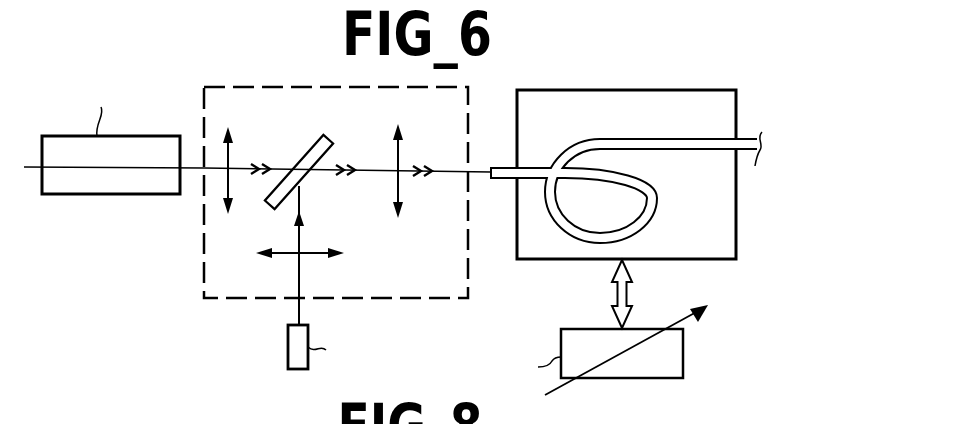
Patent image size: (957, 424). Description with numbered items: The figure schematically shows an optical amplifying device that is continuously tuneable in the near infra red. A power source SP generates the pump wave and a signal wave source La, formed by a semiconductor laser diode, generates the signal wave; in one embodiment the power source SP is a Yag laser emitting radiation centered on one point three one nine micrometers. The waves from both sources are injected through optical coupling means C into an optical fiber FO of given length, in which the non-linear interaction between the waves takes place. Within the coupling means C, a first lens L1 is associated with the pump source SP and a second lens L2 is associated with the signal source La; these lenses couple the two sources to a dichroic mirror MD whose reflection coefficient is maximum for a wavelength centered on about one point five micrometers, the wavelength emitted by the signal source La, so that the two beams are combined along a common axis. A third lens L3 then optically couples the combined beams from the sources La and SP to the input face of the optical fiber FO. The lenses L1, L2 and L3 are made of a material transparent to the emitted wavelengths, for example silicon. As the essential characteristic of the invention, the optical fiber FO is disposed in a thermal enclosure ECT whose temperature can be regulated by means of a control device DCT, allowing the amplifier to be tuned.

The power source SP is at (108, 194).
The optical coupling means C is at (468, 92).
The first lens L1 is at (228, 215).
The second lens L2 is at (344, 252).
The third lens L3 is at (400, 216).
The dichroic mirror MD is at (323, 140).
The signal wave source La is at (288, 344).
The thermal enclosure ECT is at (571, 260).
The optical fiber FO is at (747, 142).
The control device DCT is at (592, 379).